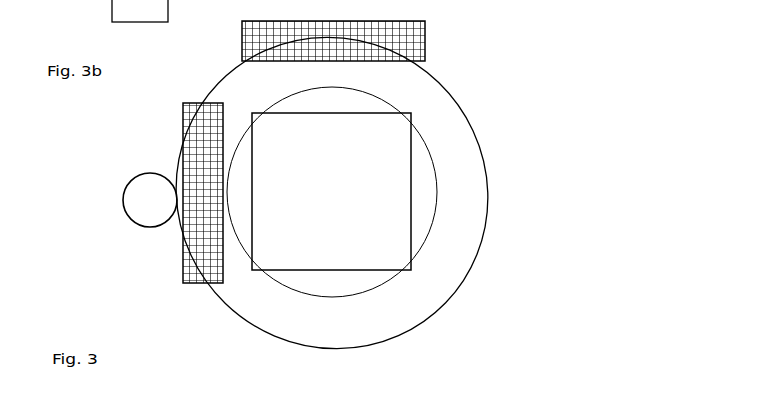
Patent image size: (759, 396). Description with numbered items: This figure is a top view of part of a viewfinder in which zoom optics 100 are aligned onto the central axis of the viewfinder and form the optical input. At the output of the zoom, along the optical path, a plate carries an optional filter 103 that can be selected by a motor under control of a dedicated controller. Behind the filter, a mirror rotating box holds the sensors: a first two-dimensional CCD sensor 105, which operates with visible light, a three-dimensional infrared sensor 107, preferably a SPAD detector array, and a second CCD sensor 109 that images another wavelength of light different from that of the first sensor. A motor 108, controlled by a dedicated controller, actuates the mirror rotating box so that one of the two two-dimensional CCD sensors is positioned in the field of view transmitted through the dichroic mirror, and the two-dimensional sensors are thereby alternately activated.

The zoom optics 100 is at (332, 198).
The optional filter 103 is at (431, 163).
The first 2D CCD sensor 105 is at (183, 263).
The 3D infrared sensor 107 is at (411, 238).
The motor 108 is at (123, 193).
The second CCD sensor 109 is at (398, 21).